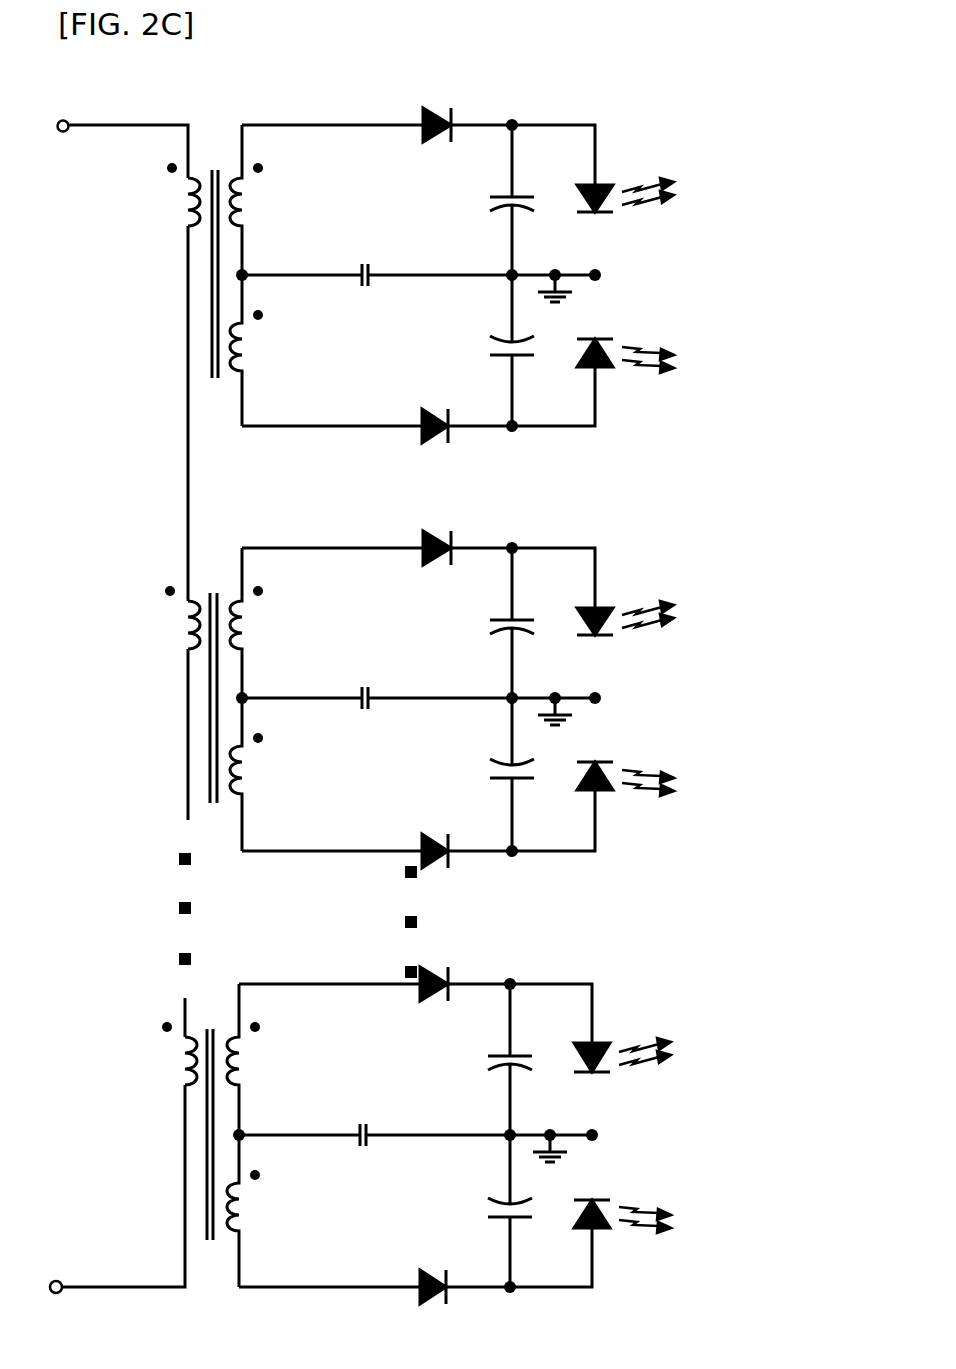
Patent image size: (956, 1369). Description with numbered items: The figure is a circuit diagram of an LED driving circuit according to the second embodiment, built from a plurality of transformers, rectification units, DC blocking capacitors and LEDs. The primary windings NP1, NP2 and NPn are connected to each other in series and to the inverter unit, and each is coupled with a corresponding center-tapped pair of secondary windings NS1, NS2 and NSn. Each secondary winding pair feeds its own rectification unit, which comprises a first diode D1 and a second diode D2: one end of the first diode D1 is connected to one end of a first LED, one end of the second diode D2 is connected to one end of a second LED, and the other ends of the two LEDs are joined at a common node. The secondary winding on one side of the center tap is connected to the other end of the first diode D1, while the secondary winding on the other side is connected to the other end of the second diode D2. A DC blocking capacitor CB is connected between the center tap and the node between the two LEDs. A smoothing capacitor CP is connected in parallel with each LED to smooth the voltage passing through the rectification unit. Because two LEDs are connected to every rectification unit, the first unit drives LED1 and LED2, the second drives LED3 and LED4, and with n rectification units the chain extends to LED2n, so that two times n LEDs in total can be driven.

The primary winding NP1 is at (160, 194).
The secondary winding NS1 is at (272, 275).
The primary winding NP2 is at (160, 617).
The secondary winding NS2 is at (272, 699).
The primary winding NPn is at (157, 1053).
The secondary winding NSn is at (269, 1135).
The first diode D1 is at (437, 535).
The second diode D2 is at (434, 837).
The DC blocking capacitor CB is at (363, 685).
The smoothing capacitor CP is at (489, 706).
The first LED LED1 is at (634, 219).
The second LED LED2 is at (634, 381).
The first LED LED3 is at (634, 642).
The second LED LED4 is at (634, 804).
The second LED LED2n is at (638, 1237).